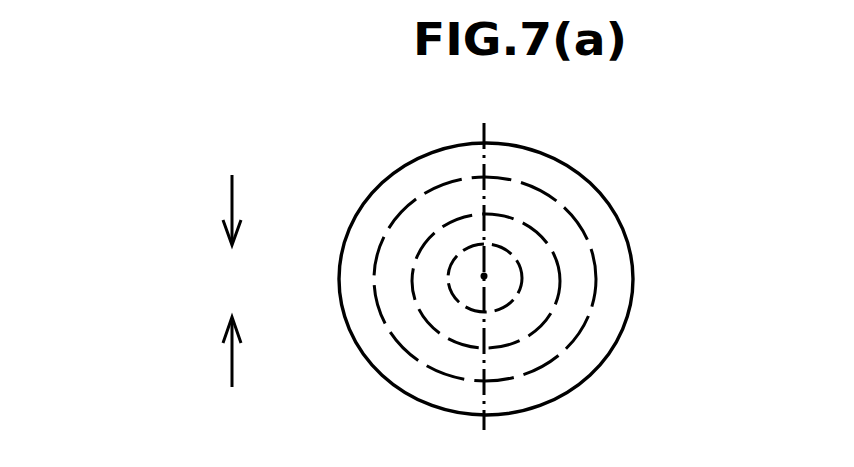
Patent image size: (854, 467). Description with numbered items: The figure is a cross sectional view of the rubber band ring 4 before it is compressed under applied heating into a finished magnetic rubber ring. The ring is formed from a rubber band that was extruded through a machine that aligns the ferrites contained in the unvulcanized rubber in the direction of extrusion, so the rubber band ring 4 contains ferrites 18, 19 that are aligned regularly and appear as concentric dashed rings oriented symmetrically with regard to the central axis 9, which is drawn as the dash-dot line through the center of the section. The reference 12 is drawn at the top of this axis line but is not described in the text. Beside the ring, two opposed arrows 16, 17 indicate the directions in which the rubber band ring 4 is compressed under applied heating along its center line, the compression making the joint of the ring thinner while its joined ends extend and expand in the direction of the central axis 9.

The rubber band ring 4 is at (596, 182).
The central axis 9 is at (484, 276).
The central axis line 12 is at (483, 132).
The arrow 16 is at (229, 210).
The arrow 17 is at (229, 359).
The ferrites 18 is at (393, 220).
The ferrites 19 is at (545, 323).